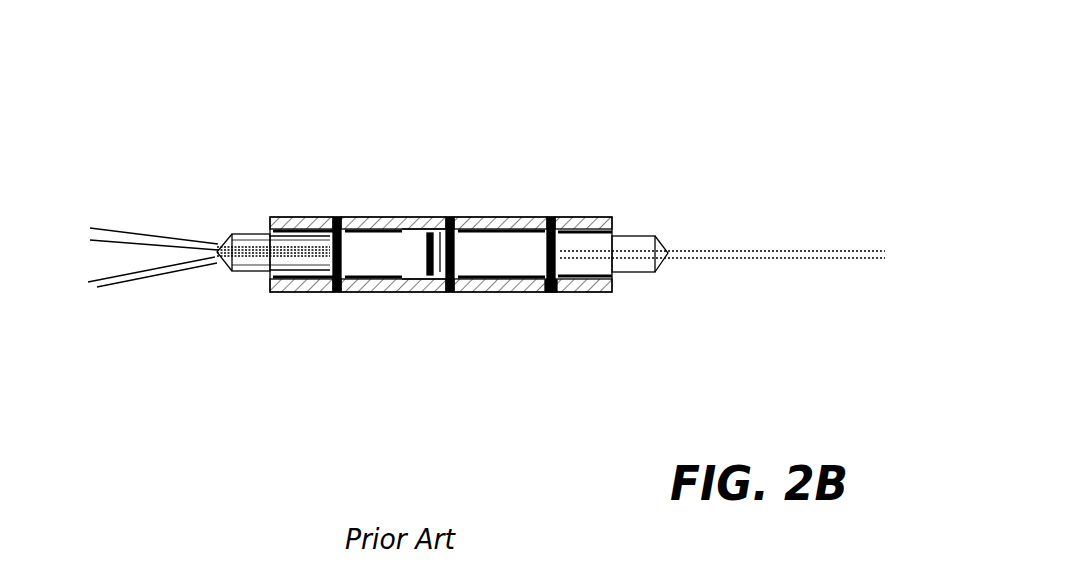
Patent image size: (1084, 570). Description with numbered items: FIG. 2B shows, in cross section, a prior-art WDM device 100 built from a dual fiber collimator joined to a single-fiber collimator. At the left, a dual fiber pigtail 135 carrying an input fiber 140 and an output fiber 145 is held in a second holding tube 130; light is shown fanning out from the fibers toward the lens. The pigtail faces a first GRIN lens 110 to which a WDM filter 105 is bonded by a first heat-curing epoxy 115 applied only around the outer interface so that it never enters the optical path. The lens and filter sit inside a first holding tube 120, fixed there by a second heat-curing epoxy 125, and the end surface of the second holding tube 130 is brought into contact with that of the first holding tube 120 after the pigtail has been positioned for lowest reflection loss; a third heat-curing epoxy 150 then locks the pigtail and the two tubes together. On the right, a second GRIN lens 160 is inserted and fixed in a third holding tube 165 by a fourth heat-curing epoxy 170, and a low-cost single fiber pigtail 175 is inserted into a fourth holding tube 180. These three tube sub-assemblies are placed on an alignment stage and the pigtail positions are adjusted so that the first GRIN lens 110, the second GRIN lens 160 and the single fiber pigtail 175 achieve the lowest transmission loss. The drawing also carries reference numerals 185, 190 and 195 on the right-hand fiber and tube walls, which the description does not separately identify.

The fiber optic connector assembly 100 is at (175, 75).
The WDM filter 105 is at (442, 232).
The first GRIN lens 110 is at (408, 243).
The first heat-curing epoxy 115 is at (428, 233).
The first holding tube 120 is at (352, 222).
The second heat-curing epoxy 125 is at (385, 280).
The second holding tube 130 is at (275, 222).
The dual fiber pigtail 135 is at (258, 270).
The input fiber 140 is at (85, 233).
The output fiber 145 is at (97, 287).
The third heat-curing epoxy 150 is at (328, 281).
The second GRIN lens 160 is at (505, 279).
The third holding tube 165 is at (532, 285).
The fourth heat-curing epoxy 170 is at (548, 222).
The single fiber pigtail 175 is at (666, 270).
The fourth holding tube 180 is at (600, 290).
The optical fiber 185 is at (718, 252).
The housing top wall 190 is at (556, 226).
The flange 195 is at (450, 285).